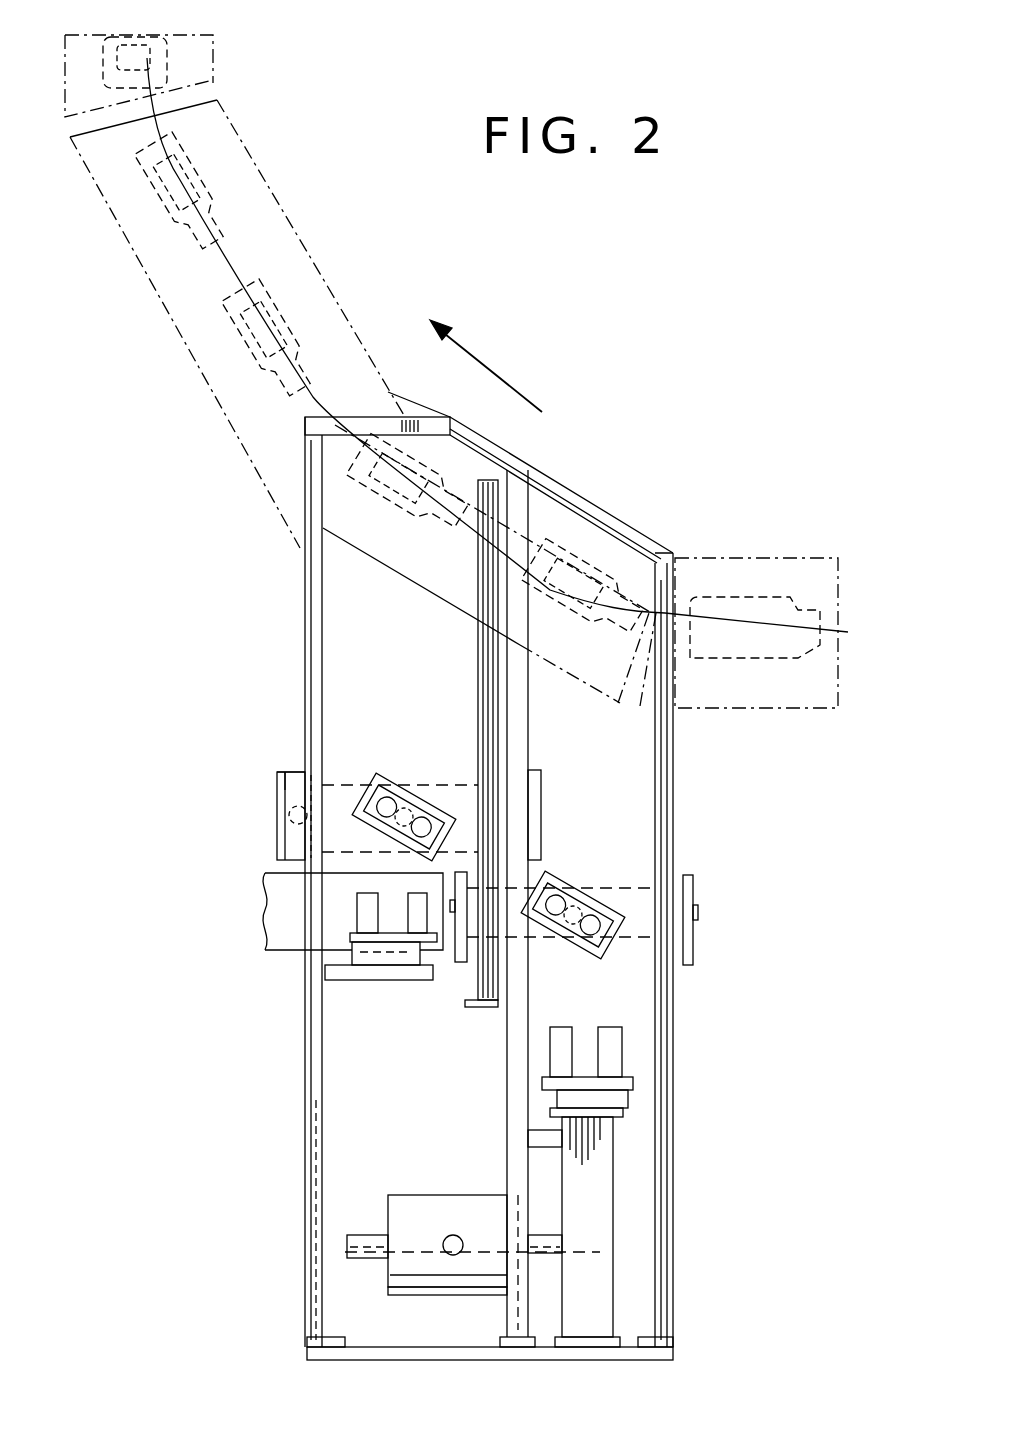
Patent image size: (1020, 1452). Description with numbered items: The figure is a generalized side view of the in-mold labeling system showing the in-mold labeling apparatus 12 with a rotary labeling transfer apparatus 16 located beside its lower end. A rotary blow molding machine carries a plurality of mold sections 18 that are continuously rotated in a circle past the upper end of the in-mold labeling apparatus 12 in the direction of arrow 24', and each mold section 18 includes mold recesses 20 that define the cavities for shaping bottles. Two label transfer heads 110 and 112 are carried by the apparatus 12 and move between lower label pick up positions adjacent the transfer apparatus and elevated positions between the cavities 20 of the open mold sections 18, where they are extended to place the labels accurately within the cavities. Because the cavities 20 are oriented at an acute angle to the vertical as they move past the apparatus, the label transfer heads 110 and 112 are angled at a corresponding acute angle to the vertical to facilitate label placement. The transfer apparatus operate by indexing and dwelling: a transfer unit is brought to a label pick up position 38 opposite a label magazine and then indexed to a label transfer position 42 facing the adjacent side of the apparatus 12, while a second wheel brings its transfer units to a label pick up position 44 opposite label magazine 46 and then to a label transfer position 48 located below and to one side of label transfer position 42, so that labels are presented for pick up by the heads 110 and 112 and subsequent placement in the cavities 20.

The in-mold labeling apparatus 12 is at (675, 797).
The rotary labeling transfer apparatus 16 is at (278, 772).
The mold section 18 is at (645, 515).
The mold recess 20 is at (590, 545).
The arrow 24' is at (486, 359).
The label pick up position 38 is at (277, 812).
The label transfer position 42 is at (418, 773).
The label pick up position 44 is at (460, 962).
The label magazine 46 is at (266, 950).
The label transfer position 48 is at (588, 902).
The label transfer head 110 is at (300, 538).
The label transfer head 112 is at (478, 618).